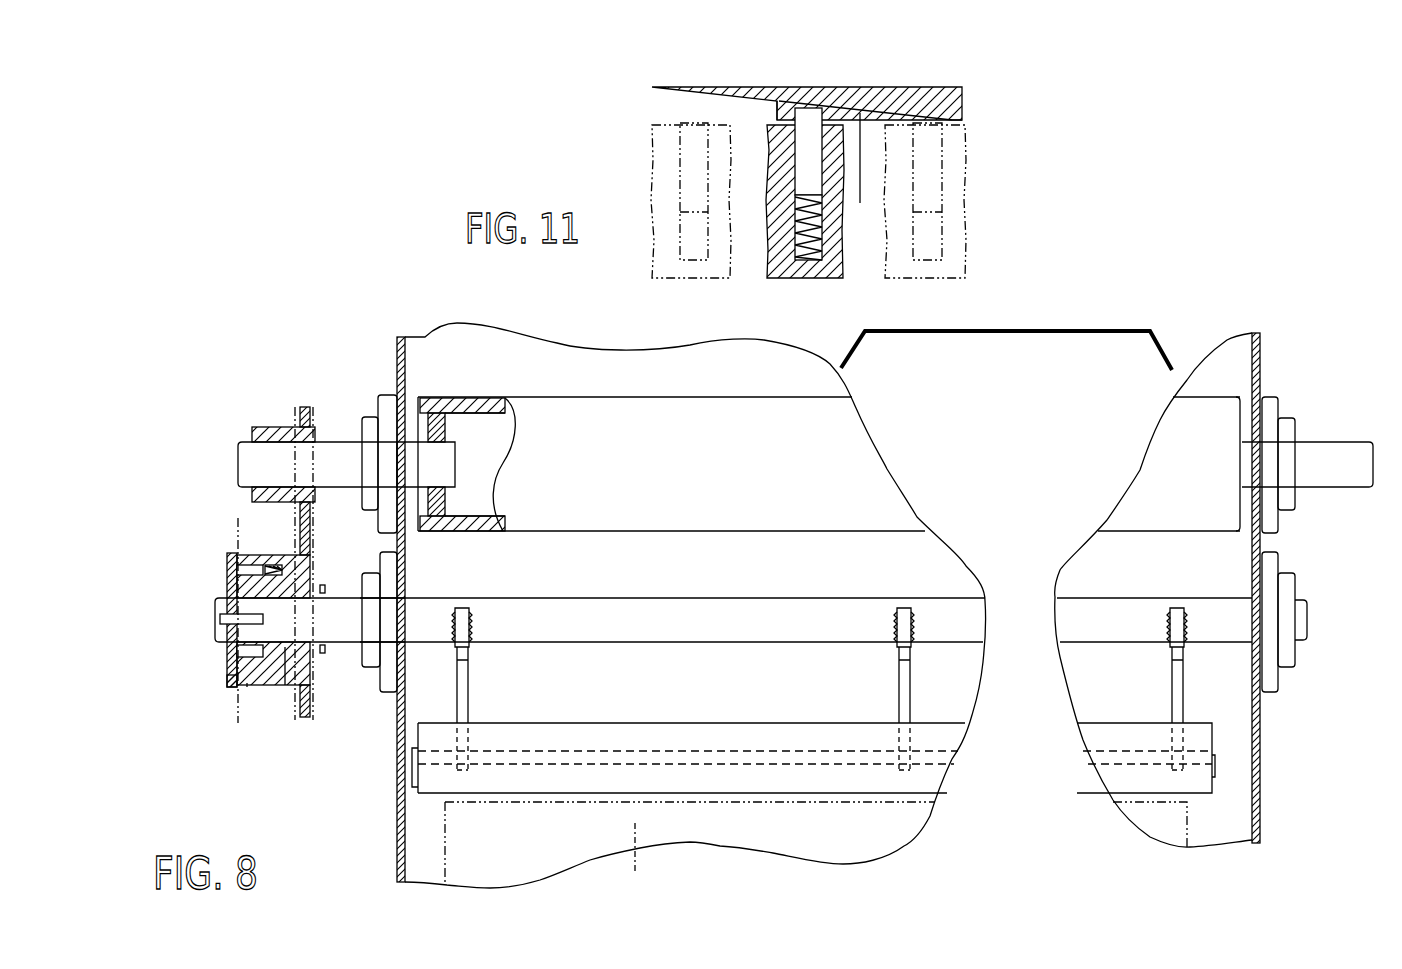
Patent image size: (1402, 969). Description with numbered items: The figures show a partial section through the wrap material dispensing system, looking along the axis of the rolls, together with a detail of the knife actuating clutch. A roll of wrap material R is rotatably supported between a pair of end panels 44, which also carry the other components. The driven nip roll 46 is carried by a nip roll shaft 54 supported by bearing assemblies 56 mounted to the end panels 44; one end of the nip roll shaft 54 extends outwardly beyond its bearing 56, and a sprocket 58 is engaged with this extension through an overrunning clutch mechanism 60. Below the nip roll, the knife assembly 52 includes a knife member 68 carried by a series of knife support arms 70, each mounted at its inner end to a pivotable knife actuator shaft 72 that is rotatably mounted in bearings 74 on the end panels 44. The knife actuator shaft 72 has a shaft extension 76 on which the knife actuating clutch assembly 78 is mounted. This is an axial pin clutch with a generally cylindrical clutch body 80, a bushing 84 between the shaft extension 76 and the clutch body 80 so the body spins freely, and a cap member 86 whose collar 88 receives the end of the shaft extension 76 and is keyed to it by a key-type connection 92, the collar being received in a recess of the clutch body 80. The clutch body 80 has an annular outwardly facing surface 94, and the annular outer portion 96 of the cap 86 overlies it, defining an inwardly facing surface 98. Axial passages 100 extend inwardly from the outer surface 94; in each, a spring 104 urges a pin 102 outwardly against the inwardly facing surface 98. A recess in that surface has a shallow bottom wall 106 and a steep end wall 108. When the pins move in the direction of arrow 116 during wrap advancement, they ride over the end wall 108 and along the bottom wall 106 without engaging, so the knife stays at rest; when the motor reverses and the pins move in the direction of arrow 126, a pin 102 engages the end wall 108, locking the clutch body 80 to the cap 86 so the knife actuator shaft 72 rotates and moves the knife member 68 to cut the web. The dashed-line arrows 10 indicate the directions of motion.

In FIG. 8, the conveyor direction 10 is at (238, 518).
In FIG. 8, the end panel 44 is at (1262, 793).
In FIG. 8, the nip roll 46 is at (548, 397).
In FIG. 8, the knife assembly 52 is at (421, 682).
In FIG. 8, the nip roll shaft 54 is at (333, 440).
In FIG. 8, the bearing assembly 56 is at (390, 397).
In FIG. 8, the sprocket 58 is at (300, 417).
In FIG. 8, the overrunning clutch mechanism 60 is at (248, 418).
In FIG. 8, the knife member 68 is at (417, 743).
In FIG. 8, the knife support arm 70 is at (470, 703).
In FIG. 8, the knife actuator shaft 72 is at (640, 595).
In FIG. 8, the bearing 74 is at (377, 663).
In FIG. 8, the shaft extension 76 is at (342, 612).
In FIG. 8, the knife actuating clutch assembly 78 is at (168, 660).
In FIG. 8, the clutch body 80 is at (267, 683).
In FIG. 8, the bushing 84 is at (285, 647).
In FIG. 8, the cap member 86 is at (227, 570).
In FIG. 8, the collar 88 is at (228, 593).
In FIG. 8, the key 92 is at (220, 620).
In FIG. 8, the outwardly facing surface 94 is at (228, 677).
In FIG. 11, the annular outer portion 96 is at (933, 95).
In FIG. 8, the annular outer portion 96 is at (228, 557).
In FIG. 11, the inwardly facing surface 98 is at (953, 122).
In FIG. 8, the inwardly facing surface 98 is at (247, 683).
In FIG. 11, the axial passage 100 is at (803, 257).
In FIG. 11, the pin 102 is at (808, 177).
In FIG. 11, the spring 104 is at (820, 248).
In FIG. 11, the shallow bottom wall 106 is at (872, 171).
In FIG. 11, the end wall 108 is at (777, 107).
In FIG. 11, the arrow 116 is at (782, 300).
In FIG. 11, the arrow 126 is at (756, 70).
In FIG. 8, the roll of wrap material R is at (647, 859).